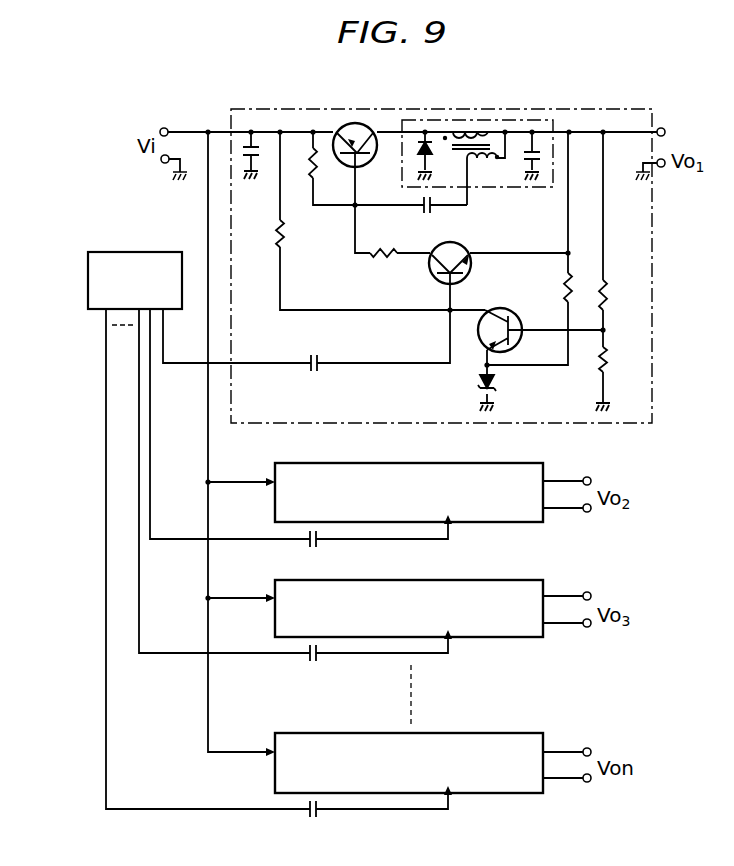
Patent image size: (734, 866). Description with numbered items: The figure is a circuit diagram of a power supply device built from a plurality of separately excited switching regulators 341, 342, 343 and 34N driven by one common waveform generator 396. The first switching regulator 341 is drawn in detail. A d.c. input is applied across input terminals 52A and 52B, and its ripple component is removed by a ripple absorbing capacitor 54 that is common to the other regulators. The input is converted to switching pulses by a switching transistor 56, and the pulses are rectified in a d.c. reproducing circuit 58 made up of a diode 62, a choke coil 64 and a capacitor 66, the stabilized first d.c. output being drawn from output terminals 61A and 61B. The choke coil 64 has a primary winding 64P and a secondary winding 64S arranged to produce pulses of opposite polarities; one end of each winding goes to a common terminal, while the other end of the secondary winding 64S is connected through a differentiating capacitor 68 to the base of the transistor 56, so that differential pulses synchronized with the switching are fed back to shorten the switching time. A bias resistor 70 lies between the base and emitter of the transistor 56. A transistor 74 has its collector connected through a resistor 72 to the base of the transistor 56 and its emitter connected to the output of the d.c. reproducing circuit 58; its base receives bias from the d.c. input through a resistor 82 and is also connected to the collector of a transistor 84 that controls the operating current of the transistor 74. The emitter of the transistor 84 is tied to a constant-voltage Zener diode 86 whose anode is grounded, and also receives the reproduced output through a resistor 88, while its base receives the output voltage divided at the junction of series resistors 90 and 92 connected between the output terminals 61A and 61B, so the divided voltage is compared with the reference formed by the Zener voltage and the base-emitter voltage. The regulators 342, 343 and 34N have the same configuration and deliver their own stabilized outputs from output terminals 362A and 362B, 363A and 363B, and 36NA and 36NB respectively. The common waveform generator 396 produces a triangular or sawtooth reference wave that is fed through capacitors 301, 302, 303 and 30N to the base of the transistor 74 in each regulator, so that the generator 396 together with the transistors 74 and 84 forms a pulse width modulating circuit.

The input terminal 52A is at (169, 120).
The input terminal 52B is at (161, 164).
The ripple absorbing capacitor 54 is at (262, 144).
The switching transistor 56 is at (355, 123).
The d.c. reproducing circuit 58 is at (532, 195).
The output terminal 61A is at (685, 136).
The output terminal 61B is at (664, 168).
The diode 62 is at (420, 140).
The choke coil 64 is at (483, 150).
The primary winding 64P is at (464, 130).
The secondary winding 64S is at (477, 166).
The capacitor 66 is at (537, 150).
The differentiating capacitor 68 is at (411, 217).
The bias resistor 70 is at (308, 180).
The resistor 72 is at (384, 241).
The transistor 74 is at (431, 268).
The resistor 82 is at (266, 235).
The transistor 84 is at (497, 307).
The constant-voltage diode 86 is at (502, 392).
The resistor 88 is at (554, 288).
The resistor 90 is at (618, 296).
The resistor 92 is at (616, 379).
The capacitor 301 is at (315, 350).
The capacitor 302 is at (313, 552).
The capacitor 303 is at (313, 667).
The capacitor 30N is at (314, 823).
The switching regulator 341 is at (653, 297).
The switching regulator 342 is at (312, 493).
The switching regulator 343 is at (312, 610).
The switching regulator 34N is at (314, 766).
The output terminal 362A is at (600, 465).
The output terminal 362B is at (589, 512).
The output terminal 363A is at (590, 592).
The output terminal 363B is at (589, 627).
The output terminal 36NA is at (590, 748).
The output terminal 36NB is at (589, 782).
The waveform generator circuit 396 is at (98, 274).